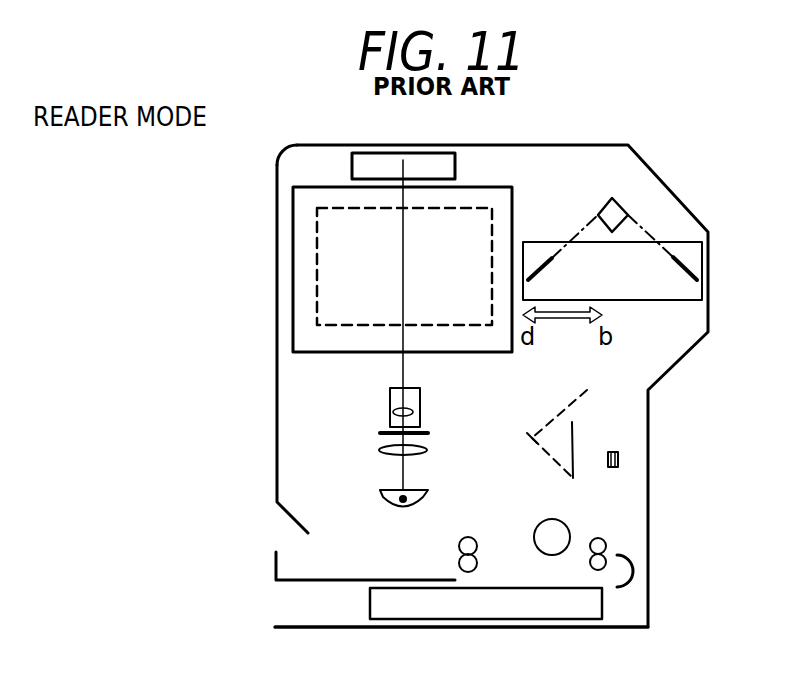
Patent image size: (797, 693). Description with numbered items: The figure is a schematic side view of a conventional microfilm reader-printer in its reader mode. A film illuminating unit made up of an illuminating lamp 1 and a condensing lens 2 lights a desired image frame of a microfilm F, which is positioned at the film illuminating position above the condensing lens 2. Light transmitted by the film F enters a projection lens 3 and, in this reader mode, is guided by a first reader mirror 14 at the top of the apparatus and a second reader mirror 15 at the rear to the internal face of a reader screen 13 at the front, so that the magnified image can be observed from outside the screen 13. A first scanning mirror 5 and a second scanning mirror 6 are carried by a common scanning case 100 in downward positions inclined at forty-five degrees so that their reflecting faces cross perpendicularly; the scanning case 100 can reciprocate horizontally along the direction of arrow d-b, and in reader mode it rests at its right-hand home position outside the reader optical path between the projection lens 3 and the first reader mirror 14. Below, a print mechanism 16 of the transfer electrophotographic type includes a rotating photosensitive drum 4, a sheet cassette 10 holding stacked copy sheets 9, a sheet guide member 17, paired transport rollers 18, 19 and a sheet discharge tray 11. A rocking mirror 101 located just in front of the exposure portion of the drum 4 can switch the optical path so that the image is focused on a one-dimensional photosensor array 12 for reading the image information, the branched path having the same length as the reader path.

The illuminating lamp 1 is at (380, 497).
The condensing lens 2 is at (385, 452).
The projection lens 3 is at (392, 406).
The microfilm F is at (380, 432).
The photosensitive drum 4 is at (548, 523).
The first scanning mirror 5 is at (539, 266).
The second scanning mirror 6 is at (690, 273).
The copy sheets 9 is at (463, 620).
The sheet cassette 10 is at (370, 601).
The sheet discharge tray 11 is at (273, 569).
The photosensor array 12 is at (620, 460).
The reader screen 13 is at (300, 240).
The first reader mirror 14 is at (369, 161).
The second reader mirror 15 is at (318, 255).
The print mechanism 16 is at (469, 488).
The sheet guide member 17 is at (633, 572).
The paired transport rollers 18 is at (600, 538).
The paired transport rollers 19 is at (458, 545).
The scanning case 100 is at (677, 242).
The rocking mirror 101 is at (576, 440).